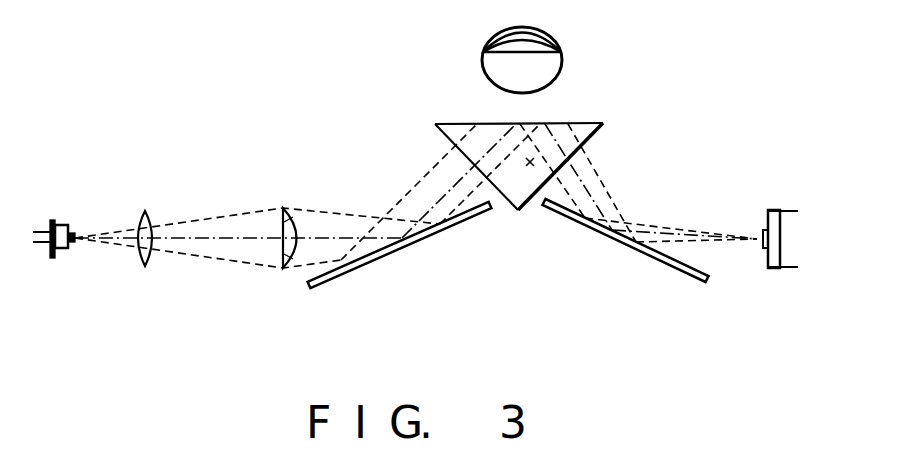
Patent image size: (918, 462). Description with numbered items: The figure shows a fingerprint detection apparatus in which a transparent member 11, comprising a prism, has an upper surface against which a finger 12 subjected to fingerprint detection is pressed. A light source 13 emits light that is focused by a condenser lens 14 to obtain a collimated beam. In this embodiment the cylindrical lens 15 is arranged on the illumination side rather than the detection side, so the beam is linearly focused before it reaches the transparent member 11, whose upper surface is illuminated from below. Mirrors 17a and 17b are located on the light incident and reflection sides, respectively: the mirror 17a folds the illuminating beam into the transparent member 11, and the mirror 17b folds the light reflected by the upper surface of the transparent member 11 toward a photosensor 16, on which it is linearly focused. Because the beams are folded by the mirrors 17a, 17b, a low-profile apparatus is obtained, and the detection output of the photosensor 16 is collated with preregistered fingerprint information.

The transparent member 11 is at (600, 124).
The finger 12 is at (561, 50).
The light source 13 is at (53, 258).
The condenser lens 14 is at (143, 267).
The cylindrical lens 15 is at (283, 268).
The photosensor 16 is at (776, 210).
The mirror 17a is at (398, 250).
The mirror 17b is at (668, 268).